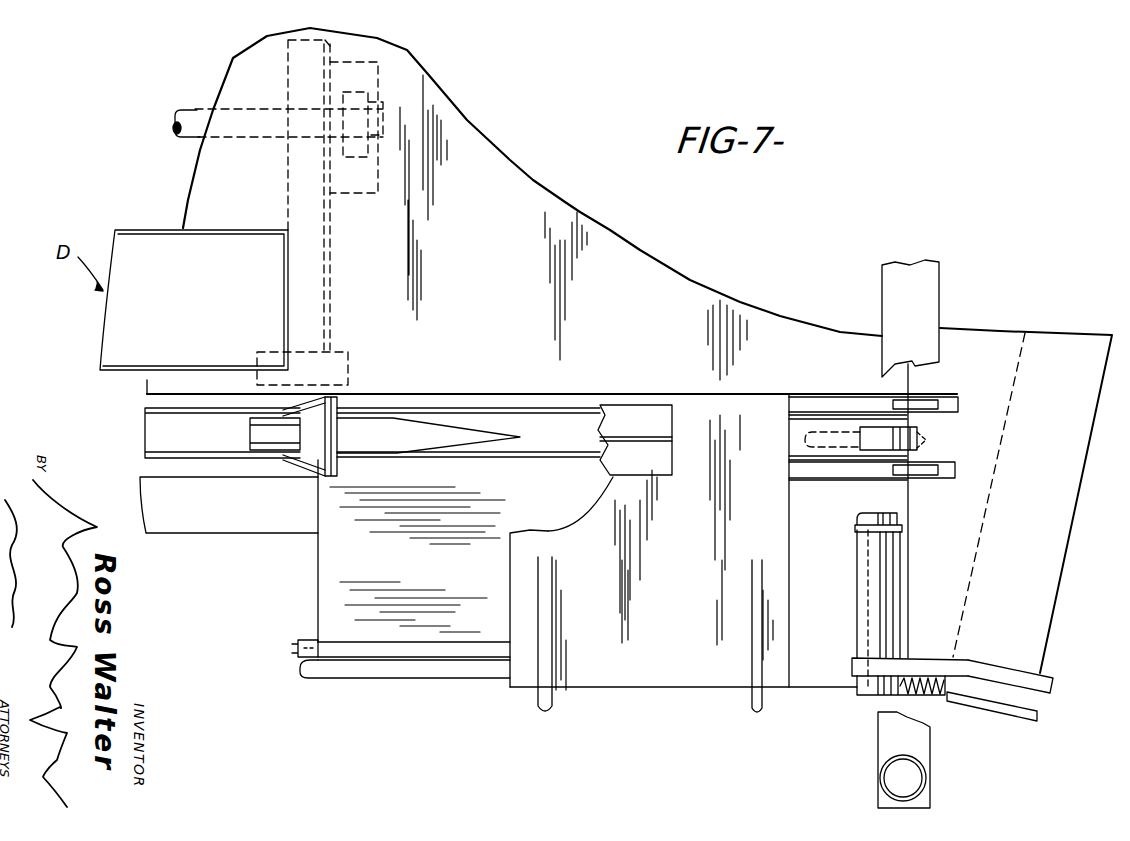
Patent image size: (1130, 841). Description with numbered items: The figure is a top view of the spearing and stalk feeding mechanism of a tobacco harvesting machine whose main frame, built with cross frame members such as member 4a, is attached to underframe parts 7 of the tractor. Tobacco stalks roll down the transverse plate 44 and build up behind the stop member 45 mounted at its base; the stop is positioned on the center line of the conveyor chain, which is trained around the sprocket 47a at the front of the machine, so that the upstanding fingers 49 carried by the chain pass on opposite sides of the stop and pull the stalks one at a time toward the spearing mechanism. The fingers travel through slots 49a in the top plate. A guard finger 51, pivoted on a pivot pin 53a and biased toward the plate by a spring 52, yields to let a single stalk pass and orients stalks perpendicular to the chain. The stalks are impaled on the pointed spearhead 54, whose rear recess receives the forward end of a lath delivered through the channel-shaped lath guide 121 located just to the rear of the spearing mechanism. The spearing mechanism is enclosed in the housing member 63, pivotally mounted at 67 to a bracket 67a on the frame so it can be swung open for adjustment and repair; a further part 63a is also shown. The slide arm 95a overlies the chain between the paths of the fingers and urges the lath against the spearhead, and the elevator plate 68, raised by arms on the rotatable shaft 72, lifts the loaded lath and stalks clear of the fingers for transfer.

The cross frame member 4a is at (323, 262).
The tractor underframe part 7 is at (932, 308).
The plate 44 is at (1038, 347).
The stop member 45 is at (927, 438).
The sprocket 47a is at (823, 432).
The fingers 49 is at (925, 403).
The slots 49a is at (797, 393).
The guard finger 51 is at (866, 513).
The spring 52 is at (921, 677).
The pivot pin 53a is at (887, 590).
The spearhead 54 is at (418, 427).
The housing member 63 is at (673, 571).
The bearing block 63a is at (568, 528).
The pivot 67 is at (298, 650).
The bracket 67a is at (332, 580).
The elevator plate 68 is at (128, 310).
The shaft 72 is at (191, 102).
The slide arm 95a is at (147, 432).
The lath guide 121 is at (310, 452).